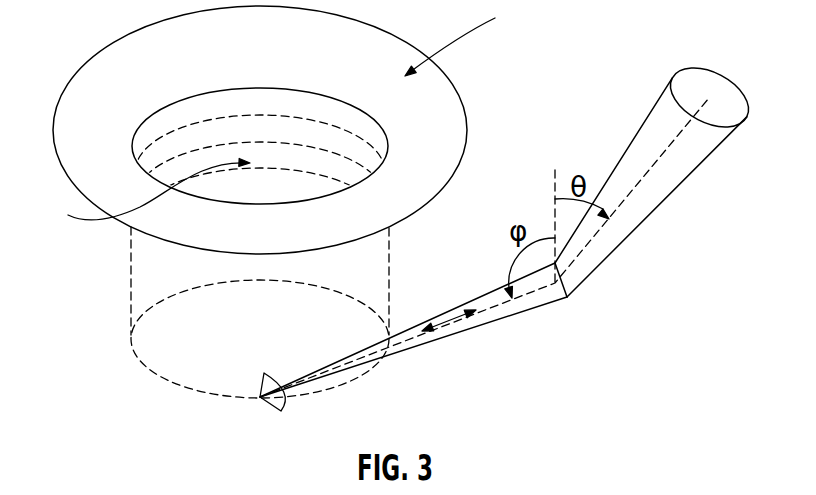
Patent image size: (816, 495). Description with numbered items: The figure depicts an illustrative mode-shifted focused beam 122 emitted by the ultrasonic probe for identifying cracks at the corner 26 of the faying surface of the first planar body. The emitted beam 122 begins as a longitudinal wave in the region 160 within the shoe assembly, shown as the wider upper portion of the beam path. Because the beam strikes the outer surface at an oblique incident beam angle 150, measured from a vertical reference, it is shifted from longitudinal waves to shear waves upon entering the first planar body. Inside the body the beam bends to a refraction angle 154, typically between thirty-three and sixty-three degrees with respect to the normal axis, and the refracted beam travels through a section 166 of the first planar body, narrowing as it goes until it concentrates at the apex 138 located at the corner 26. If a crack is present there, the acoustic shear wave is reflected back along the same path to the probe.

The corner 26 is at (247, 396).
The mode-shifted focused beam 122 is at (666, 158).
The apex 138 is at (268, 418).
The oblique incident beam angle 150 is at (556, 192).
The refraction angle 154 is at (512, 290).
The region 160 is at (662, 110).
The section 166 is at (491, 319).